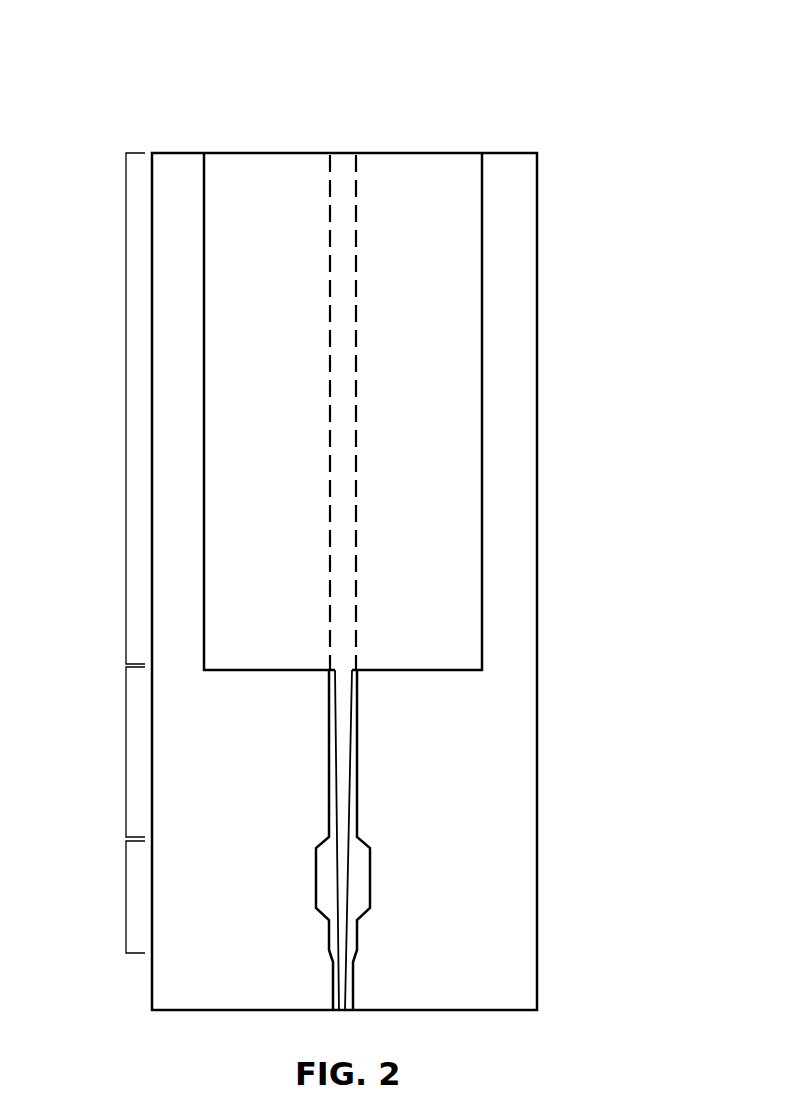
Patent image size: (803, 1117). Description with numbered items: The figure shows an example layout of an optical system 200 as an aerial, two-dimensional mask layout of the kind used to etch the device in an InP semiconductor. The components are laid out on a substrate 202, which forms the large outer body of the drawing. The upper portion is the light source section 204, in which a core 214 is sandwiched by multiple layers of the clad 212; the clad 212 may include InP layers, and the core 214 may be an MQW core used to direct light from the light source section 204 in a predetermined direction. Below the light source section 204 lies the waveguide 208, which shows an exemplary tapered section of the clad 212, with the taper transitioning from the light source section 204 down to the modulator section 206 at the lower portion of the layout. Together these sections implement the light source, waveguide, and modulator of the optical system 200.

The optical system 200 is at (153, 92).
The substrate 202 is at (458, 750).
The light source section 204 is at (126, 409).
The modulator section 206 is at (126, 897).
The waveguide 208 is at (126, 752).
The clad 212 is at (482, 233).
The core 214 is at (357, 328).